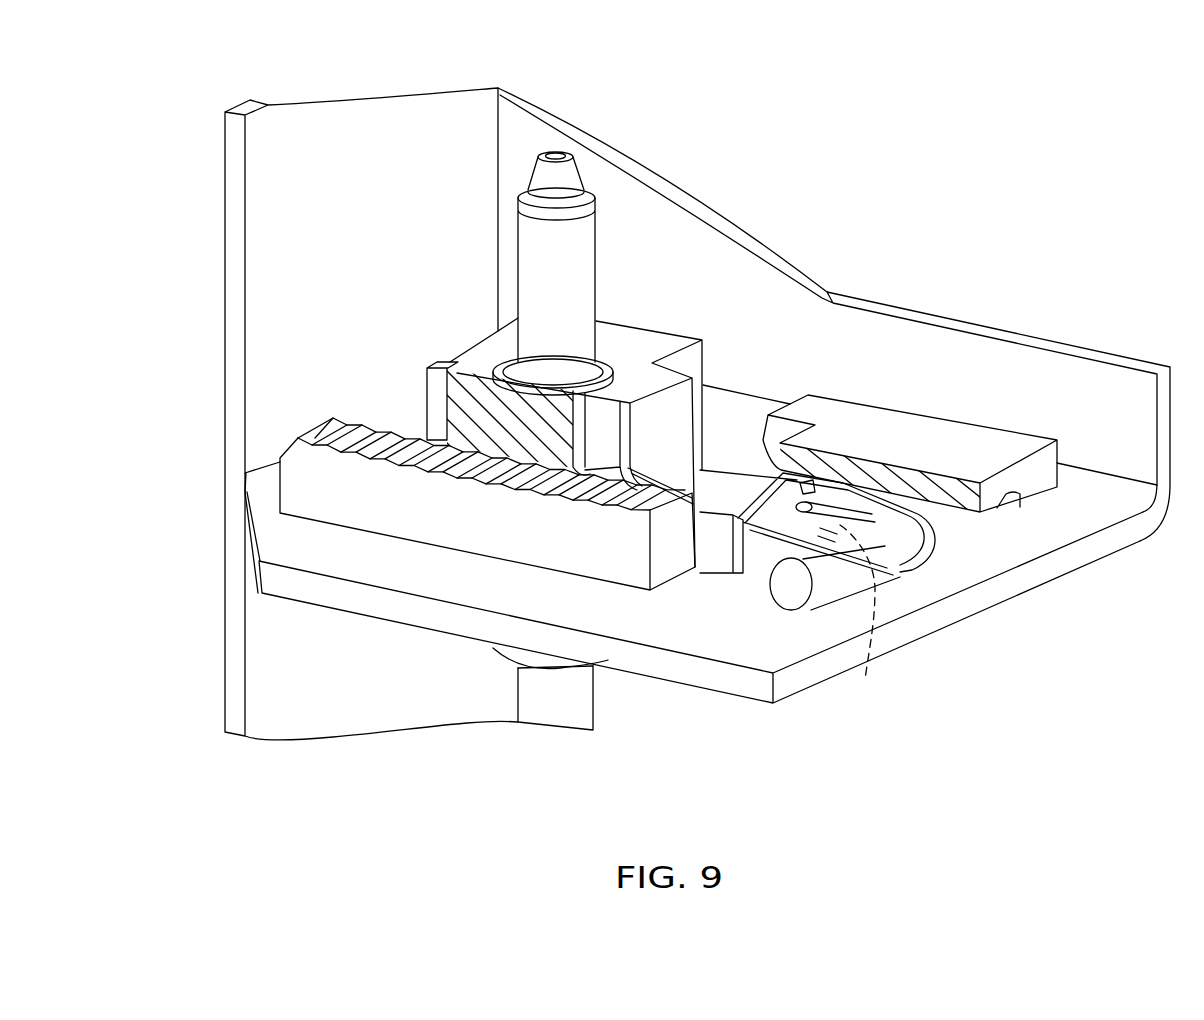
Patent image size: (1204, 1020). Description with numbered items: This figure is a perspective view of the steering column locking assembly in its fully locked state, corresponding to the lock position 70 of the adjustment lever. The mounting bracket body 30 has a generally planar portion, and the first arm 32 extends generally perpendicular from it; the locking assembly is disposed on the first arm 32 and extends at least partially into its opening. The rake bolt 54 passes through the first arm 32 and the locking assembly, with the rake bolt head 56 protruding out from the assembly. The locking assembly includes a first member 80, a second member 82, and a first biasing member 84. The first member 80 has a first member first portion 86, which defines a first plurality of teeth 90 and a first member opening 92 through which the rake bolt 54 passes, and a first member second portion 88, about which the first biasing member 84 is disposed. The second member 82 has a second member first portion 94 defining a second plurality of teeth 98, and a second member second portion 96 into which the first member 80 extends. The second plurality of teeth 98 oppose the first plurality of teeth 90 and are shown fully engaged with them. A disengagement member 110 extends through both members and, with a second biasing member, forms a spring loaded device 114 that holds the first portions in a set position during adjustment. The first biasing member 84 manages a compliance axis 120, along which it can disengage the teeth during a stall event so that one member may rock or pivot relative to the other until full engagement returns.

The mounting bracket body 30 is at (266, 285).
The first arm 32 is at (1027, 547).
The rake bolt 54 is at (533, 238).
The rake bolt head 56 is at (563, 170).
The lock position 70 is at (837, 275).
The first member 80 is at (452, 347).
The second member 82 is at (250, 486).
The first biasing member 84 is at (927, 556).
The first member first portion 86 is at (453, 363).
The first member second portion 88 is at (837, 582).
The first plurality of teeth 90 is at (427, 425).
The first member opening 92 is at (498, 363).
The second member first portion 94 is at (290, 492).
The second member second portion 96 is at (943, 457).
The second plurality of teeth 98 is at (323, 438).
The disengagement member 110 is at (568, 667).
The spring loaded device 114 is at (510, 677).
The compliance axis 120 is at (865, 621).